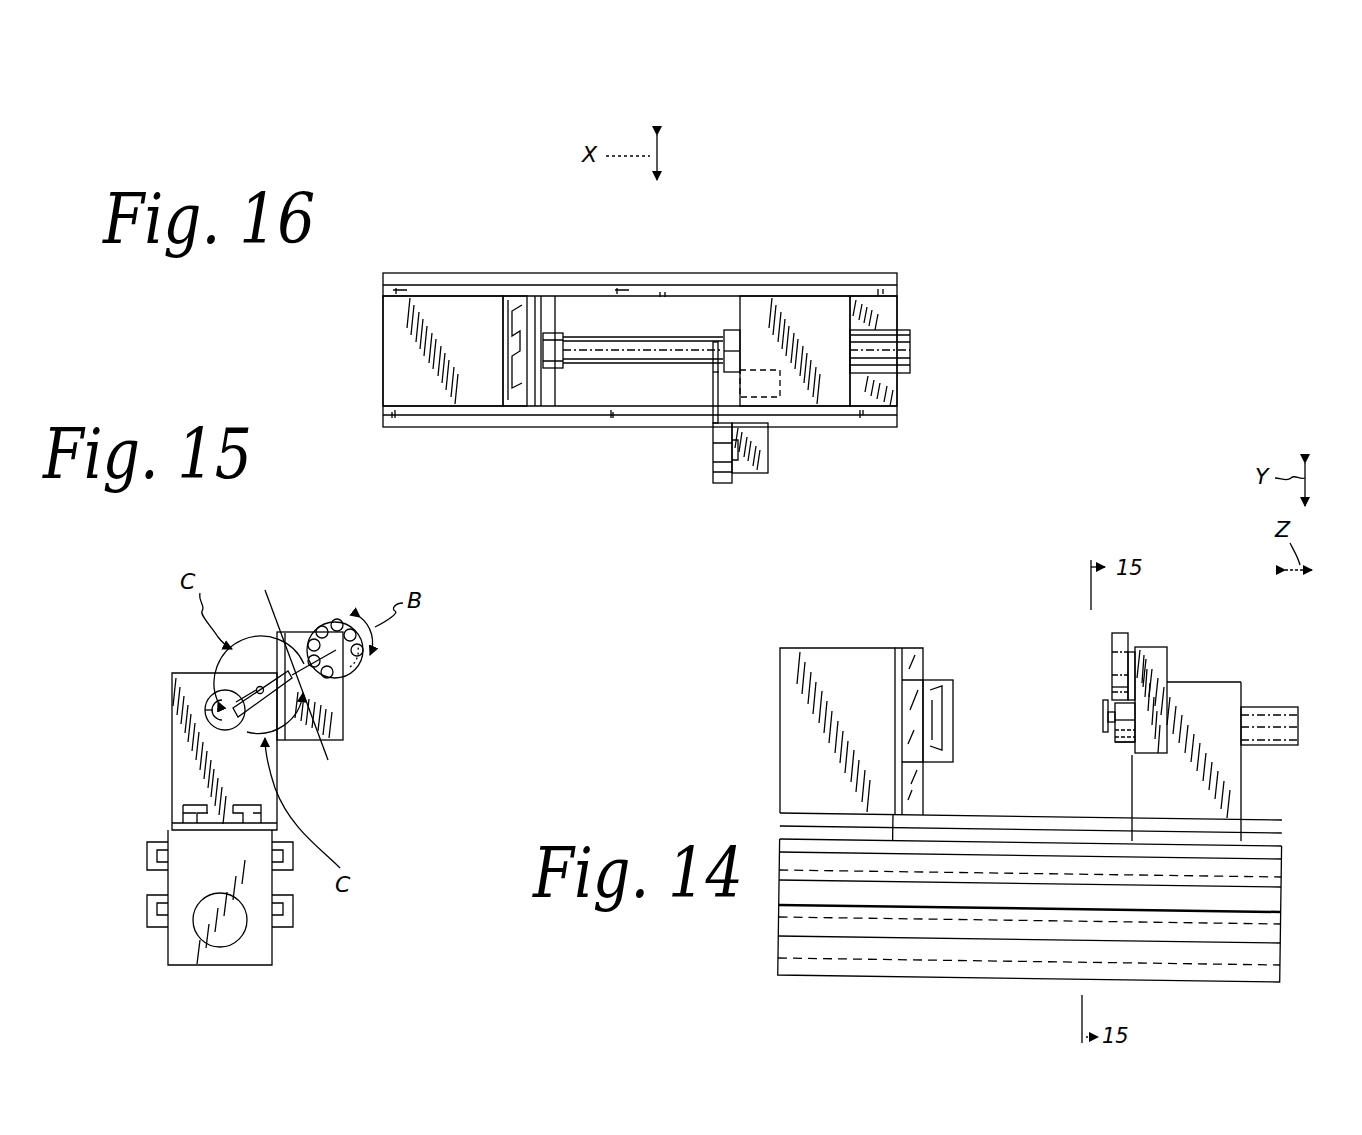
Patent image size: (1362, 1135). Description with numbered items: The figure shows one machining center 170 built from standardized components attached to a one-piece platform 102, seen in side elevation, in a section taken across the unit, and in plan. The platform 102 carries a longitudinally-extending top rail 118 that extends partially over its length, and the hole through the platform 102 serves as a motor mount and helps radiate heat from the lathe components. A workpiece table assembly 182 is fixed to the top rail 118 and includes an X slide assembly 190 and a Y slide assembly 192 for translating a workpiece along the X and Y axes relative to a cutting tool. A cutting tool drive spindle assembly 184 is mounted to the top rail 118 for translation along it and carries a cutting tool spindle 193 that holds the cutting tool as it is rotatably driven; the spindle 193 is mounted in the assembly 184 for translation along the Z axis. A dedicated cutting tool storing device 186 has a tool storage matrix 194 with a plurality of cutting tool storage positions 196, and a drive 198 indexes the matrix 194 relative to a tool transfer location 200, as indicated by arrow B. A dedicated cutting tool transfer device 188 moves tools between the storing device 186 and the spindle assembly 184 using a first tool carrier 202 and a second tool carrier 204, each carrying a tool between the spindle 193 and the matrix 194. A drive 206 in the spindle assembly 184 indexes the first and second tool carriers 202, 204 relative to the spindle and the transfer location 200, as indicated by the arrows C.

In FIG. 15, the platform 102 is at (243, 952).
In FIG. 14, the platform 102 is at (777, 965).
In FIG. 16, the top rail 118 is at (622, 302).
In FIG. 15, the top rail 118 is at (171, 804).
In FIG. 14, the top rail 118 is at (1019, 813).
In FIG. 16, the machining center 170 is at (776, 233).
In FIG. 15, the machining center 170 is at (278, 539).
In FIG. 14, the machining center 170 is at (1114, 515).
In FIG. 16, the workpiece table assembly 182 is at (405, 353).
In FIG. 14, the workpiece table assembly 182 is at (851, 648).
In FIG. 15, the cutting tool drive spindle assembly 184 is at (171, 747).
In FIG. 14, the cutting tool drive spindle assembly 184 is at (1198, 684).
In FIG. 16, the cutting tool storing device 186 is at (768, 470).
In FIG. 15, the cutting tool storing device 186 is at (288, 651).
In FIG. 14, the cutting tool storing device 186 is at (1161, 651).
In FIG. 16, the cutting tool transfer device 188 is at (713, 382).
In FIG. 15, the cutting tool transfer device 188 is at (247, 684).
In FIG. 14, the cutting tool transfer device 188 is at (1103, 716).
In FIG. 16, the X slide assembly 190 is at (547, 333).
In FIG. 14, the X slide assembly 190 is at (943, 680).
In FIG. 16, the Y slide assembly 192 is at (503, 330).
In FIG. 14, the Y slide assembly 192 is at (910, 648).
In FIG. 16, the cutting tool spindle 193 is at (729, 332).
In FIG. 15, the cutting tool spindle 193 is at (207, 691).
In FIG. 14, the cutting tool spindle 193 is at (1124, 742).
In FIG. 15, the tool storage matrix 194 is at (344, 658).
In FIG. 14, the tool storage matrix 194 is at (1120, 633).
In FIG. 15, the cutting tool storage positions 196 is at (346, 617).
In FIG. 15, the drive 198 is at (345, 720).
In FIG. 14, the drive 198 is at (1167, 748).
In FIG. 15, the tool transfer location 200 is at (328, 760).
In FIG. 15, the first tool carrier 202 is at (268, 674).
In FIG. 15, the second tool carrier 204 is at (208, 710).
In FIG. 16, the drive 206 is at (780, 392).